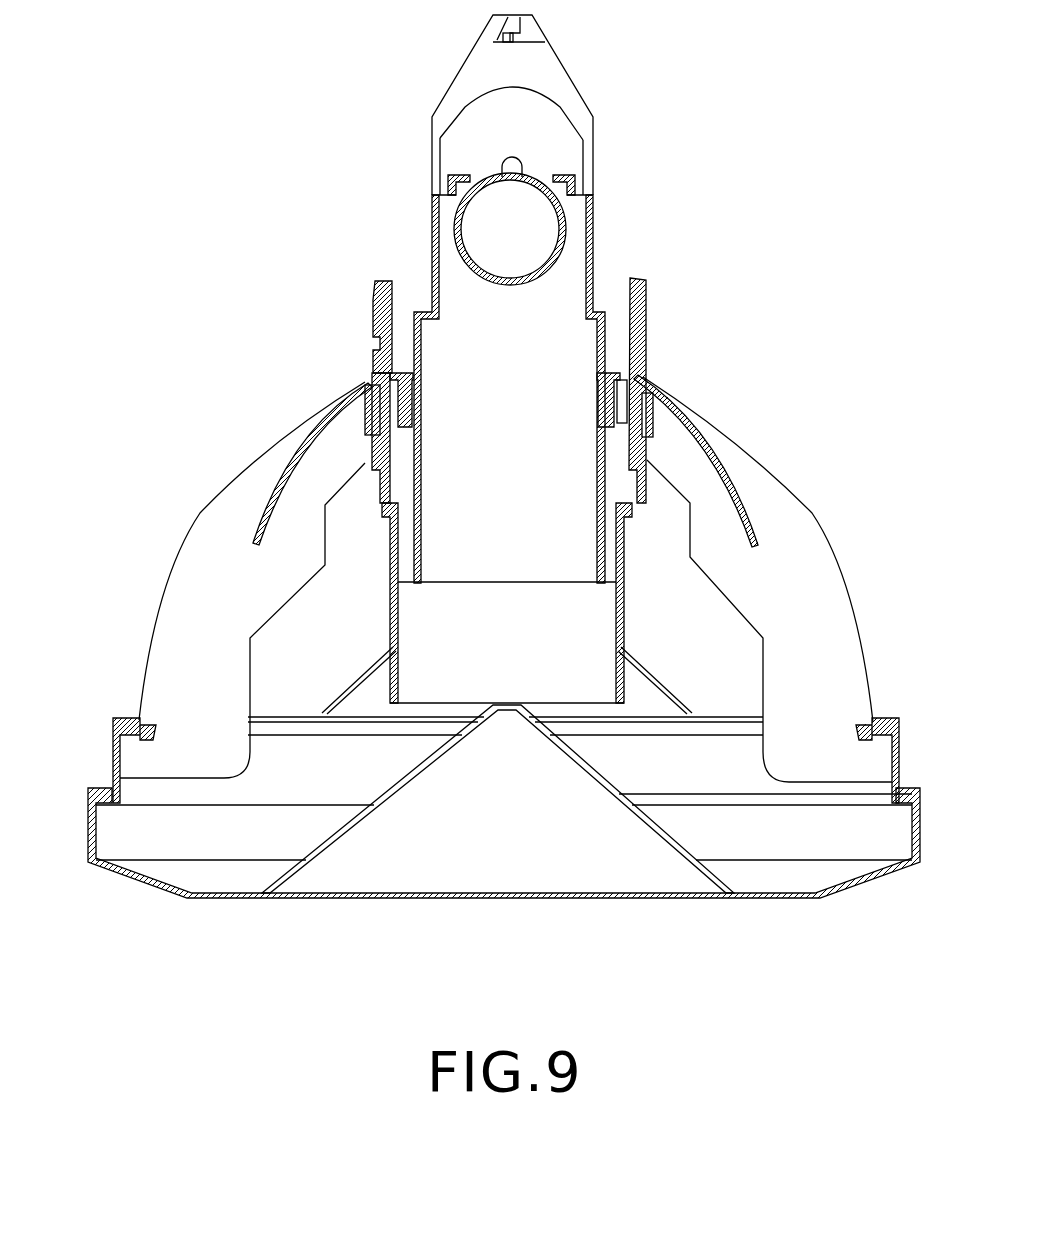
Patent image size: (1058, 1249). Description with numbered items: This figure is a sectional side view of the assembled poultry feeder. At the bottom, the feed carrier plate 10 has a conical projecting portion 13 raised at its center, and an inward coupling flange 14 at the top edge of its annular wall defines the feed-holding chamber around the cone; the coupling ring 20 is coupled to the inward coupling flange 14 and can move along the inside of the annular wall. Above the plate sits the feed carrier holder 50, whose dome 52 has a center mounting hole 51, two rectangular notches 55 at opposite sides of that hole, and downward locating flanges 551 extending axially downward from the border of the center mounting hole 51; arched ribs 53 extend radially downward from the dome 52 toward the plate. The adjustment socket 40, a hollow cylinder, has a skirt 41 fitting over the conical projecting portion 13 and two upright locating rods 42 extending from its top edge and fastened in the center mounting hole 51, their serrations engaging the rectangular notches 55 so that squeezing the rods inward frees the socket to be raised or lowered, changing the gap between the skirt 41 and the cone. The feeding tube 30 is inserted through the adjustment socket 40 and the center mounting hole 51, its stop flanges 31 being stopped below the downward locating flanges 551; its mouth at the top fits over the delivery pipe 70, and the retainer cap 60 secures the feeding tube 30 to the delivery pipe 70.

The feed carrier plate 10 is at (150, 898).
The conical projecting portion 13 is at (355, 820).
The inward coupling flange 14 is at (108, 783).
The coupling ring 20 is at (905, 738).
The feeding tube 30 is at (597, 258).
The stop flanges 31 is at (368, 423).
The adjustment socket 40 is at (382, 553).
The skirt 41 is at (363, 673).
The upright locating rods 42 is at (375, 320).
The feed carrier holder 50 is at (253, 435).
The center mounting hole 51 is at (643, 362).
The dome 52 is at (722, 452).
The arched ribs 53 is at (783, 508).
The rectangular notches 55 is at (393, 373).
The downward locating flanges 551 is at (368, 387).
The retainer cap 60 is at (587, 73).
The delivery pipe 70 is at (572, 185).